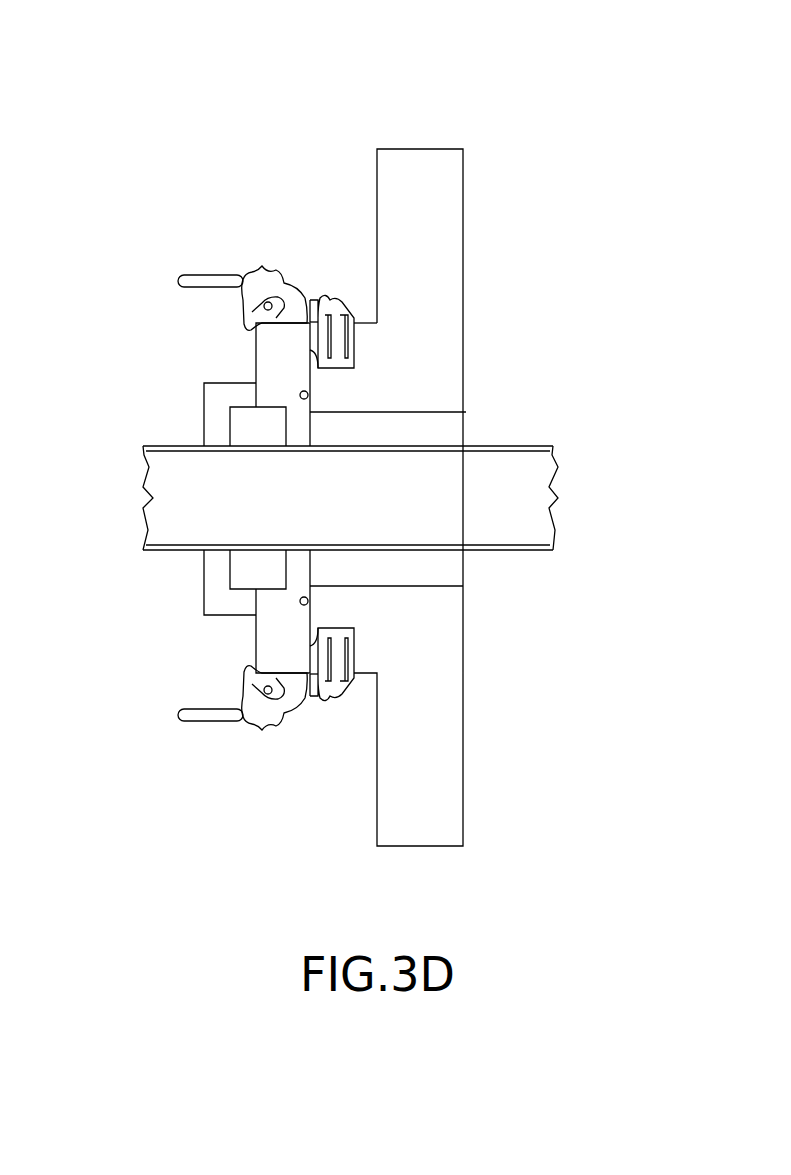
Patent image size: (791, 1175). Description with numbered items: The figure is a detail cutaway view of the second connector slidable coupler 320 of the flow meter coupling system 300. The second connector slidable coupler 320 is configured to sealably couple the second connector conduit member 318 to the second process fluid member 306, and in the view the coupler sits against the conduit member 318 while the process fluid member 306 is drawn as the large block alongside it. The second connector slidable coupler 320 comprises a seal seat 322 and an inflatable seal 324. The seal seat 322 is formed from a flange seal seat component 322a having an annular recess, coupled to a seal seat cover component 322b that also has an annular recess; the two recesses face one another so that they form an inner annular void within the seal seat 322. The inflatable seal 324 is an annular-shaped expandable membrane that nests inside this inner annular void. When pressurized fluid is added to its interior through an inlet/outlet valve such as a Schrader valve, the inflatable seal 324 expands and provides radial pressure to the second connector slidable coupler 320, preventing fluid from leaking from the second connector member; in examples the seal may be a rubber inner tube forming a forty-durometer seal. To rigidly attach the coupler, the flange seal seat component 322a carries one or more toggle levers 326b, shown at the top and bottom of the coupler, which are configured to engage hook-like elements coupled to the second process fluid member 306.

The flow meter coupling system 300 is at (112, 86).
The second process fluid member 306 is at (416, 148).
The second connector conduit member 318 is at (147, 507).
The second connector slidable coupler 320 is at (325, 218).
The seal seat 322 is at (206, 411).
The flange seal seat component 322a is at (265, 338).
The seal seat cover component 322b is at (204, 383).
The inflatable seal 324 is at (243, 577).
The toggle lever 326b is at (222, 717).